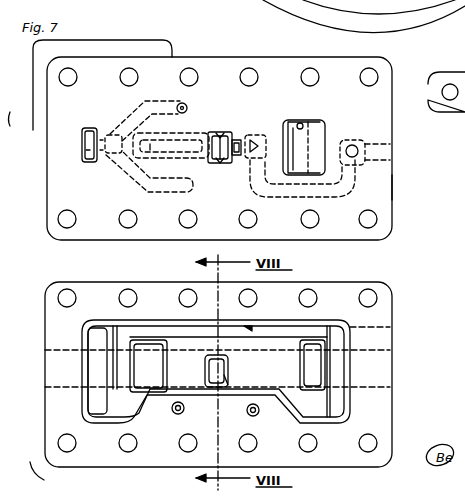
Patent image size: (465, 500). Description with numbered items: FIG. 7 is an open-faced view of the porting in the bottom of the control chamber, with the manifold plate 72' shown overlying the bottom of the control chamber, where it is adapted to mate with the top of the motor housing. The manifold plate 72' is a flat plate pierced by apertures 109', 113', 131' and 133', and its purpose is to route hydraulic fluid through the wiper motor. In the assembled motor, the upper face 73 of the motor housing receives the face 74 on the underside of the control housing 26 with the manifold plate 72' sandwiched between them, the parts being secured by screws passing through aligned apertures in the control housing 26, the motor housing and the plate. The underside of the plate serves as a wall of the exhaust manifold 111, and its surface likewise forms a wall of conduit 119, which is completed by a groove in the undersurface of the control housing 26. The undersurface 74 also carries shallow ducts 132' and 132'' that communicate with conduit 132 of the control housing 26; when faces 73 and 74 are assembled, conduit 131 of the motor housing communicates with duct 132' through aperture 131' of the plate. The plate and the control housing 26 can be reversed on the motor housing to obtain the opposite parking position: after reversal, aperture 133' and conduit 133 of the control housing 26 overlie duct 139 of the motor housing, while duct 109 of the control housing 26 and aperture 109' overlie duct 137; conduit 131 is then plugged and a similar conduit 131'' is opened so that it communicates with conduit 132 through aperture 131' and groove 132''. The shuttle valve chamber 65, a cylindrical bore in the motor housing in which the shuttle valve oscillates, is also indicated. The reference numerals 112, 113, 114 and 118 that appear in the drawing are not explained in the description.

The control housing 26 is at (212, 57).
The shuttle valve chamber 65 is at (120, 365).
The manifold plate 72' is at (236, 148).
The upper face 73 is at (380, 404).
The face 74 is at (393, 186).
The duct 109 is at (304, 134).
The aperture 109' is at (326, 136).
The exhaust manifold 111 is at (286, 324).
The slot 112 is at (174, 135).
The chamber 113 is at (233, 134).
The aperture 113' is at (221, 115).
The passage 114 is at (228, 380).
The port 118 is at (209, 168).
The conduit 119 is at (281, 197).
The conduit 131 is at (200, 407).
The aperture 131' is at (205, 94).
The conduit 131'' is at (272, 424).
The conduit 132 is at (107, 123).
The shallow duct 132' is at (145, 105).
The shallow duct 132'' is at (150, 183).
The conduit 133 is at (79, 133).
The aperture 133' is at (68, 164).
The duct 137 is at (127, 373).
The duct 139 is at (315, 378).